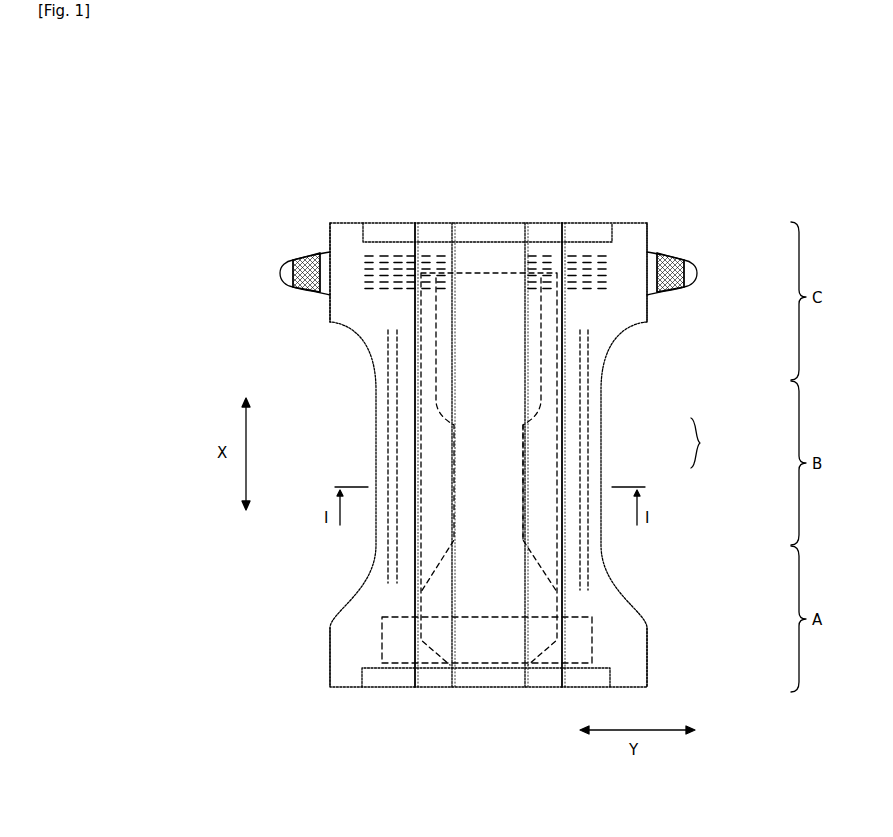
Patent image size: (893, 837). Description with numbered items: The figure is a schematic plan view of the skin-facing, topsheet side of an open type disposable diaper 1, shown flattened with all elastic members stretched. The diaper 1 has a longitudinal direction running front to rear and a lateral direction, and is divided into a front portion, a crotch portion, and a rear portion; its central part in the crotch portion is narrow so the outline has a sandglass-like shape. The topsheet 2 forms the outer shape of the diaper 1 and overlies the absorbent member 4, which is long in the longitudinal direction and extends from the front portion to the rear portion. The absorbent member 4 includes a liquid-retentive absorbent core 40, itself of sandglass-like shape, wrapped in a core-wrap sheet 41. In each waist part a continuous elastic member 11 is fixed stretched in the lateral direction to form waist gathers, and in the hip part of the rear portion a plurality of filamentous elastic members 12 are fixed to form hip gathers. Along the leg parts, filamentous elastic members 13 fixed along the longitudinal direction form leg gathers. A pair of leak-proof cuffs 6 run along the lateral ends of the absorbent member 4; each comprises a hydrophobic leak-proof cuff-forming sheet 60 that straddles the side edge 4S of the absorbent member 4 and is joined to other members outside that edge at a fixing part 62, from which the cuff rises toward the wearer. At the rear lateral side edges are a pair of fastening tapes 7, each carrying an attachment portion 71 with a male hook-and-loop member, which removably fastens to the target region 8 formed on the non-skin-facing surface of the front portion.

The open type disposable diaper 1 is at (736, 140).
The topsheet 2 is at (484, 300).
The absorbent member 4 is at (702, 443).
The side edge 4S is at (557, 368).
The absorbent core 40 is at (563, 412).
The core-wrap sheet 41 is at (543, 462).
The leak-proof cuff 6 is at (520, 565).
The fastening tape 7 is at (280, 274).
The attachment portion 71 is at (306, 268).
The target region 8 is at (578, 640).
The elastic member 11 is at (602, 232).
The filamentous elastic members 12 is at (382, 256).
The filamentous elastic members 13 is at (397, 420).
The leak-proof cuff-forming sheet 60 is at (358, 320).
The fixing part 62 is at (410, 597).